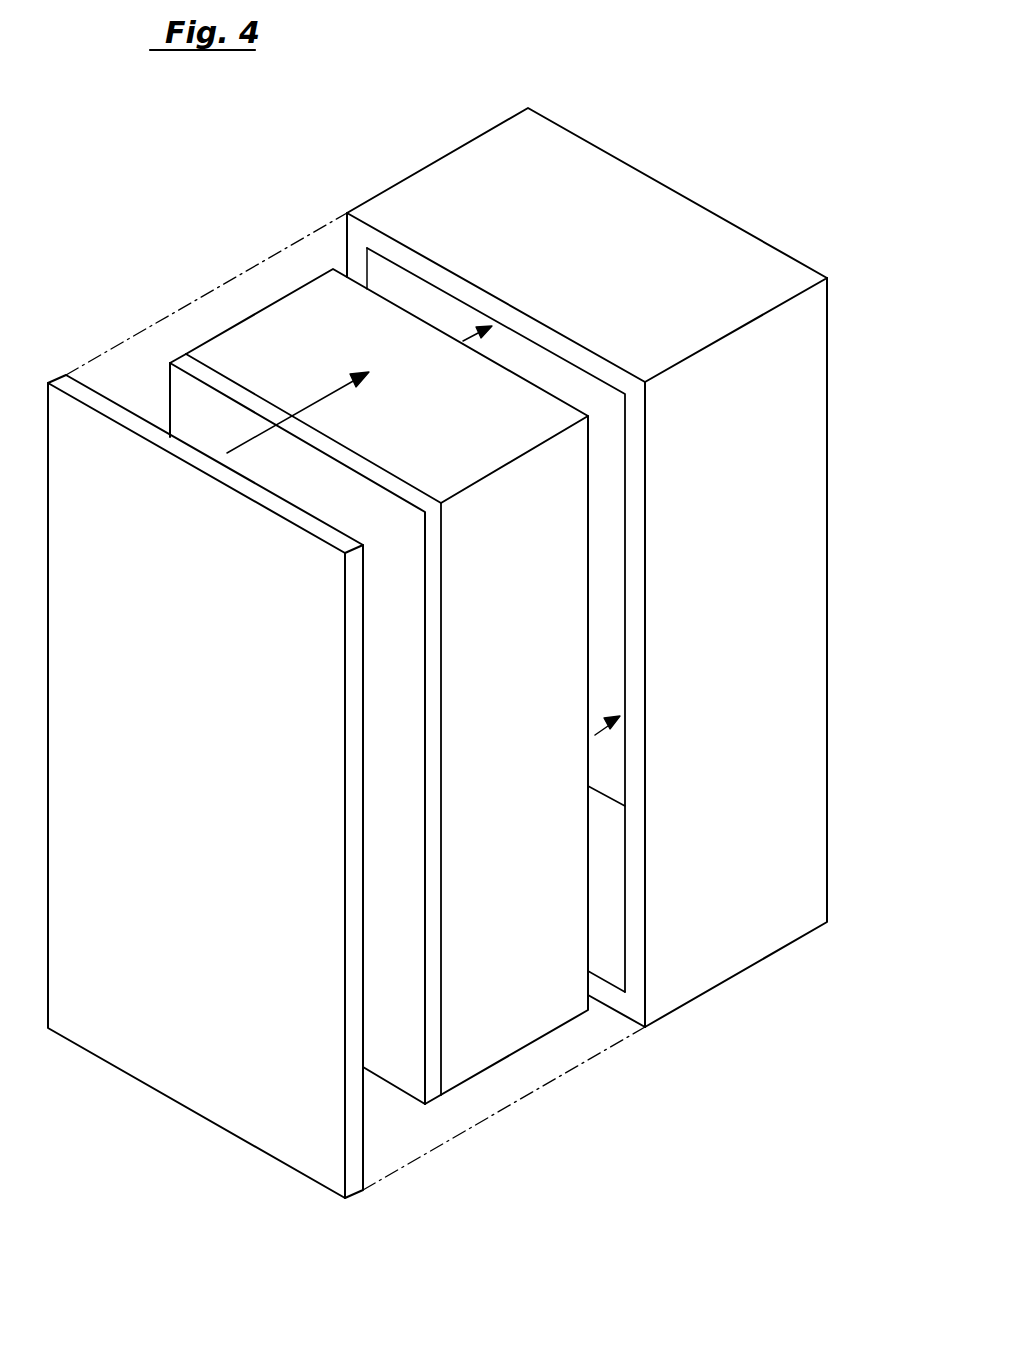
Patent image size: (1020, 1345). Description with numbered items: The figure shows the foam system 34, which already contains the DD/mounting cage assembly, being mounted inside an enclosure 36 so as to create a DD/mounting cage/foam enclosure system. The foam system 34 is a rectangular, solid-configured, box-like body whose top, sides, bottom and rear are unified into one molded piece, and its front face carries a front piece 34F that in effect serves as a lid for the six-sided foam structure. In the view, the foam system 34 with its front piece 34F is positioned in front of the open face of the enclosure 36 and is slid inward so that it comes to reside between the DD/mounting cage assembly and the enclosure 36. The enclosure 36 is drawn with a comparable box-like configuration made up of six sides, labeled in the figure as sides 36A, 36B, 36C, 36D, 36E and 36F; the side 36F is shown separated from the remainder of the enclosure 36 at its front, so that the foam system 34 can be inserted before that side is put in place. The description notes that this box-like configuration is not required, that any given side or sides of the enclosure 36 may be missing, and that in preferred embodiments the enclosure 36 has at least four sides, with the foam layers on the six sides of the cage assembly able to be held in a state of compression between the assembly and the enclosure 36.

The foam system 34 is at (267, 353).
The front piece 34F is at (188, 407).
The enclosure 36 is at (611, 548).
The top panel 36A is at (605, 250).
The side panel 36B is at (775, 878).
The side panel 36C is at (418, 172).
The bottom panel 36D is at (737, 977).
The back panel 36E is at (850, 300).
The front panel 36F is at (225, 998).